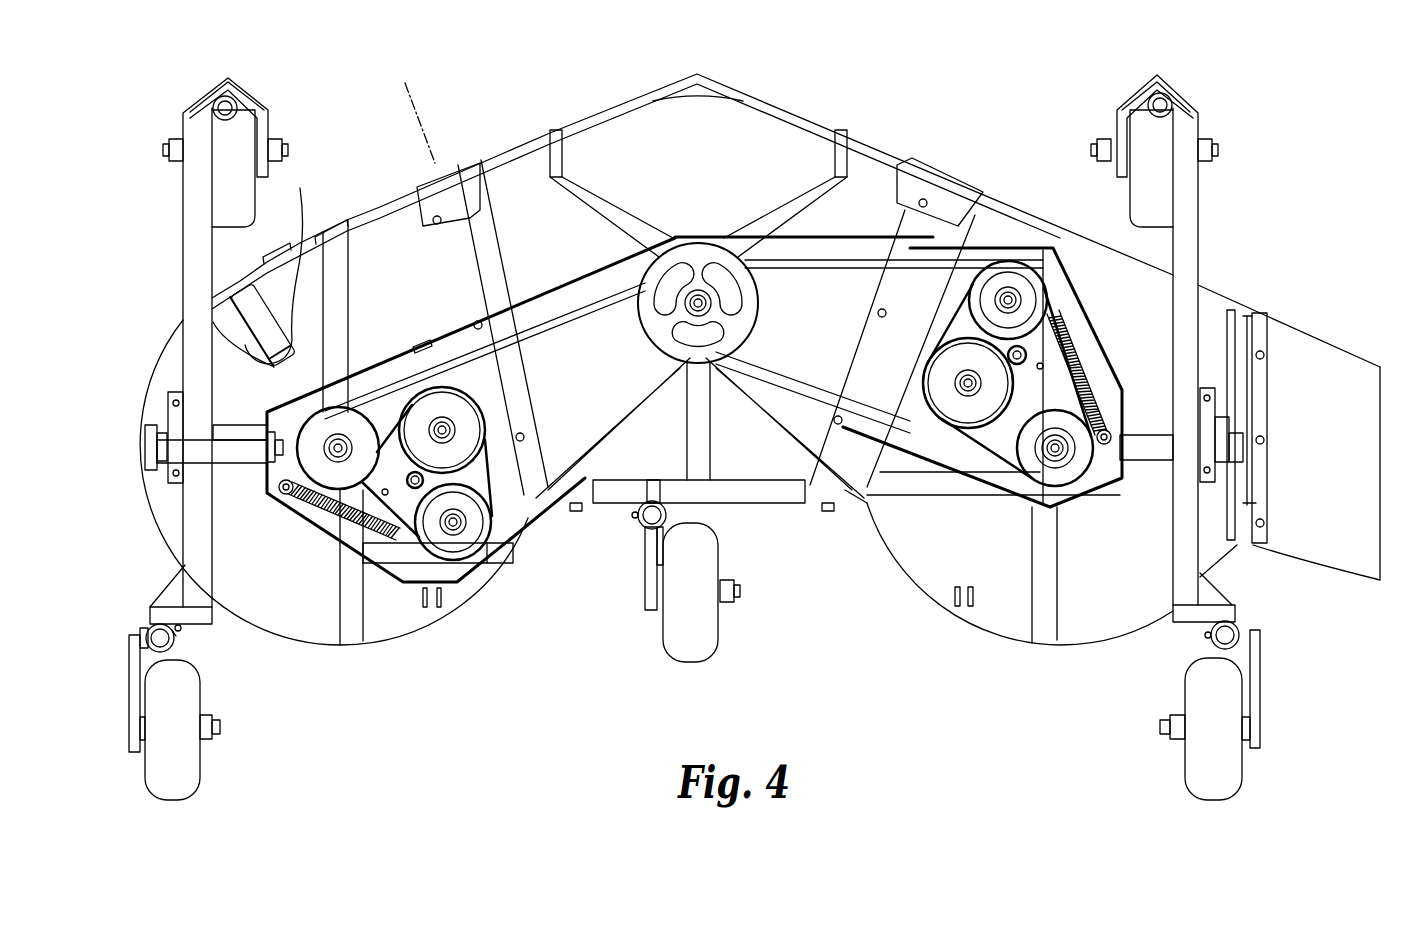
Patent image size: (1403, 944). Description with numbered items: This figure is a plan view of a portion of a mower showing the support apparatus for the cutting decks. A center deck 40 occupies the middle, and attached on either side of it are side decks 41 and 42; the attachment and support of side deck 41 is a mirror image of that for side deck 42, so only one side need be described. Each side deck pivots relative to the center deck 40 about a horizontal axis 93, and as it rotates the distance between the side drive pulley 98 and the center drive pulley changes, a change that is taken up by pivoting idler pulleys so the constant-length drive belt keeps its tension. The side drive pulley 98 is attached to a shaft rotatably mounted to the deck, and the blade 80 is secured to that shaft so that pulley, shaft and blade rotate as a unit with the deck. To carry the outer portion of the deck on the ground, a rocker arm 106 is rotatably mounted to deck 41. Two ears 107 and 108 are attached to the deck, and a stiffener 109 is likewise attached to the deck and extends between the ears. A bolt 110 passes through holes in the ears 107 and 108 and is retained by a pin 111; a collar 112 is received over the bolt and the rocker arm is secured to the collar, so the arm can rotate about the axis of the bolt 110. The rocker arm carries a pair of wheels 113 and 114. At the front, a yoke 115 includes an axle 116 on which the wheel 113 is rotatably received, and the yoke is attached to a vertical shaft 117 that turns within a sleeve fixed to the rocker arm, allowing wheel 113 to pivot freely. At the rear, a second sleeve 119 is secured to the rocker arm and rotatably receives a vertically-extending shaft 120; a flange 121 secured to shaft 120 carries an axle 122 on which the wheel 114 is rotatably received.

The center deck 40 is at (737, 148).
The side deck 41 is at (330, 638).
The side deck 42 is at (1070, 625).
The blade 80 is at (253, 313).
The horizontal axis 93 is at (410, 90).
The side drive pulley 98 is at (362, 433).
The rocker arm 106 is at (190, 270).
The ear 107 is at (153, 477).
The ear 108 is at (270, 500).
The stiffener 109 is at (247, 423).
The bolt 110 is at (238, 122).
The pin 111 is at (283, 455).
The collar 112 is at (245, 457).
The wheel 113 is at (230, 213).
The wheel 114 is at (173, 780).
The yoke 115 is at (247, 97).
The axle 116 is at (170, 148).
The vertical shaft 117 is at (215, 92).
The second sleeve 119 is at (152, 625).
The vertically-extending shaft 120 is at (177, 628).
The flange 121 is at (133, 675).
The axle 122 is at (227, 727).